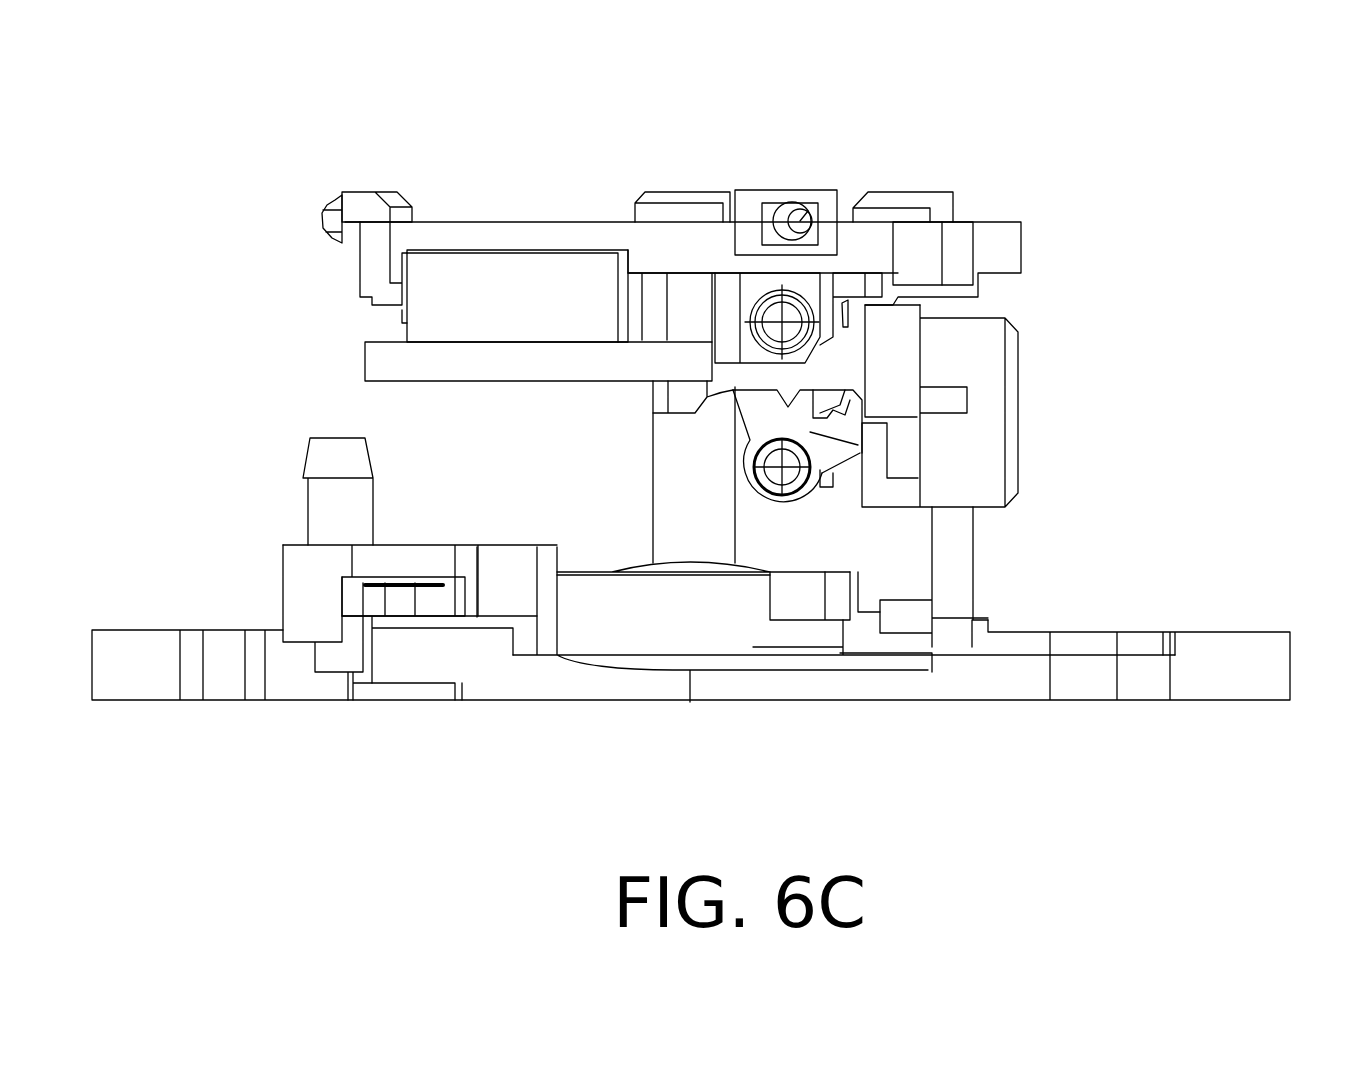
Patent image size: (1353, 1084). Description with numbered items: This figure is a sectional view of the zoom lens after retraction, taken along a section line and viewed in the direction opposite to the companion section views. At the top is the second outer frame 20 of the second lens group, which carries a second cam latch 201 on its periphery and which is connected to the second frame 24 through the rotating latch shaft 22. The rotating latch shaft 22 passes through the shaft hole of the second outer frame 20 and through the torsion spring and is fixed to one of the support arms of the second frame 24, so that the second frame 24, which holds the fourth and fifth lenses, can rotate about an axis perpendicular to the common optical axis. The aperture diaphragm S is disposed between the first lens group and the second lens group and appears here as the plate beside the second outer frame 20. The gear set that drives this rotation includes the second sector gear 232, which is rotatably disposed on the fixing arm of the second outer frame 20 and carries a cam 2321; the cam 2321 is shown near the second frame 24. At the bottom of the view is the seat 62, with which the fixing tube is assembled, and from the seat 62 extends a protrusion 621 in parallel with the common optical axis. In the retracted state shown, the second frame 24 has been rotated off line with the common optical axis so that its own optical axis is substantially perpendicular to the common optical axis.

The second outer frame 20 is at (998, 248).
The second cam latch 201 is at (805, 215).
The rotating latch shaft 22 is at (762, 300).
The aperture diaphragm S is at (385, 362).
The second frame 24 is at (860, 445).
The cam 2321 is at (760, 425).
The second sector gear 232 is at (980, 488).
The protrusion 621 is at (688, 500).
The seat 62 is at (1250, 650).